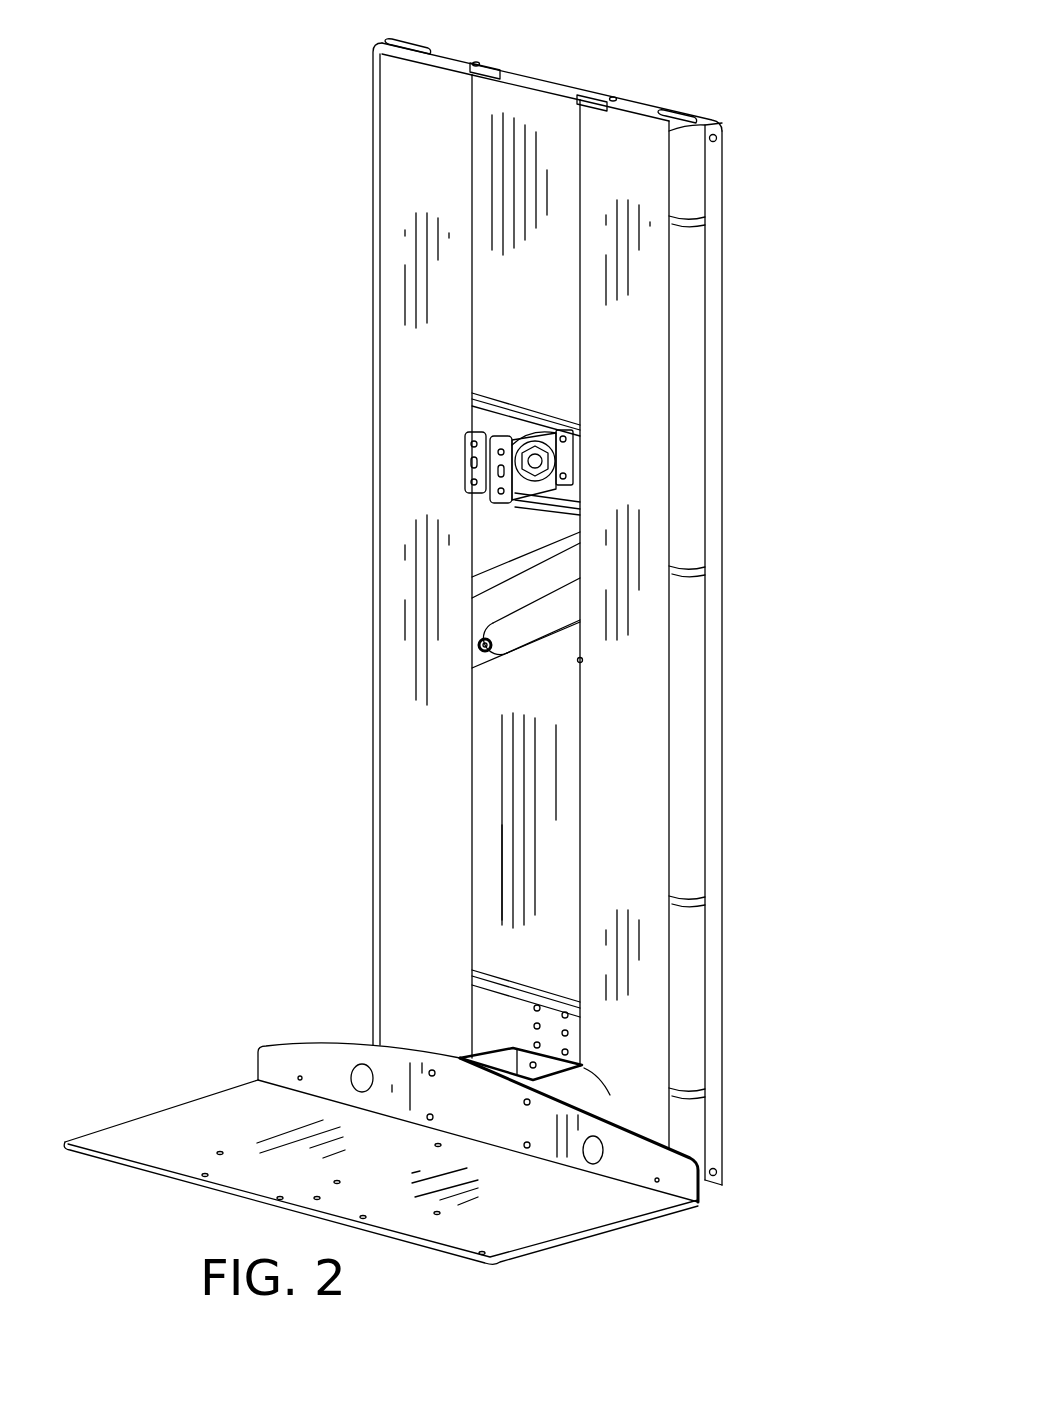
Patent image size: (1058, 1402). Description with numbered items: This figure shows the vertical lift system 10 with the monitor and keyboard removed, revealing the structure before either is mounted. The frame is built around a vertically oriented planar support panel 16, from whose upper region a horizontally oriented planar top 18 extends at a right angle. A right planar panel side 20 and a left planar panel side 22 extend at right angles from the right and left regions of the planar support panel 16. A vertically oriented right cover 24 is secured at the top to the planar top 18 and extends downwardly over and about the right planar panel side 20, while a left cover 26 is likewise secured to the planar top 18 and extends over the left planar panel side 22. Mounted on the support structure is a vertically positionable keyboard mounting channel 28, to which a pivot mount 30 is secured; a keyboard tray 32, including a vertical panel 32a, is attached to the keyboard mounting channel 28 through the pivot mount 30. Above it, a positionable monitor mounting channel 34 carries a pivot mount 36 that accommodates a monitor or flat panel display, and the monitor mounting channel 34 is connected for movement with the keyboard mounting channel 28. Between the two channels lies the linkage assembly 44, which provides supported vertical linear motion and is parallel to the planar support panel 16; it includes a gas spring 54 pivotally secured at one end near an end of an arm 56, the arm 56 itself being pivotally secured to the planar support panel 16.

The vertical lift system 10 is at (808, 148).
The planar support panel 16 is at (540, 336).
The planar top 18 is at (528, 85).
The right planar panel side 20 is at (716, 245).
The left planar panel side 22 is at (388, 110).
The right cover 24 is at (612, 135).
The left cover 26 is at (438, 78).
The keyboard mounting channel 28 is at (503, 1020).
The pivot mount 30 is at (552, 1062).
The keyboard tray 32 is at (148, 1110).
The vertical panel 32a is at (345, 1062).
The monitor mounting channel 34 is at (490, 418).
The pivot mount 36 is at (470, 446).
The linkage assembly 44 is at (542, 658).
The gas spring 54 is at (530, 630).
The arm 56 is at (522, 588).